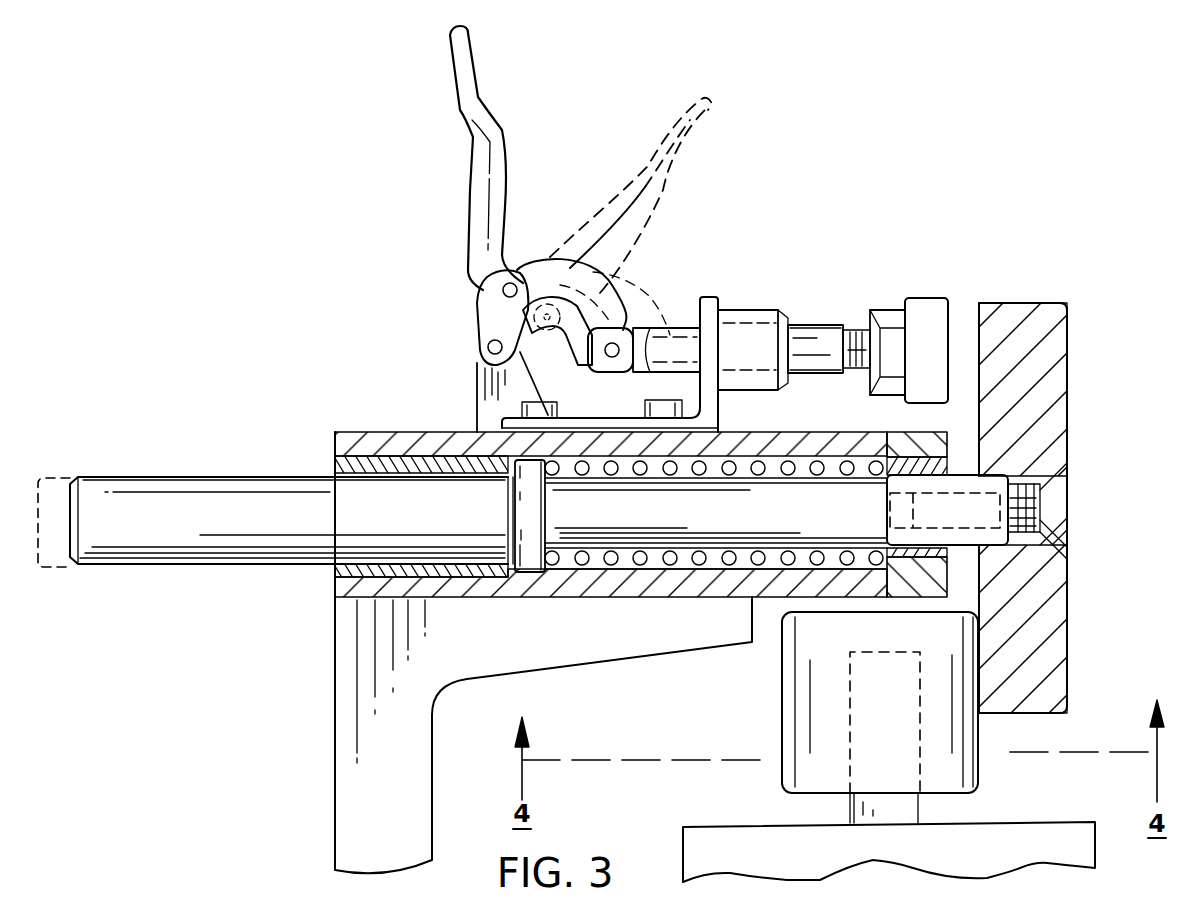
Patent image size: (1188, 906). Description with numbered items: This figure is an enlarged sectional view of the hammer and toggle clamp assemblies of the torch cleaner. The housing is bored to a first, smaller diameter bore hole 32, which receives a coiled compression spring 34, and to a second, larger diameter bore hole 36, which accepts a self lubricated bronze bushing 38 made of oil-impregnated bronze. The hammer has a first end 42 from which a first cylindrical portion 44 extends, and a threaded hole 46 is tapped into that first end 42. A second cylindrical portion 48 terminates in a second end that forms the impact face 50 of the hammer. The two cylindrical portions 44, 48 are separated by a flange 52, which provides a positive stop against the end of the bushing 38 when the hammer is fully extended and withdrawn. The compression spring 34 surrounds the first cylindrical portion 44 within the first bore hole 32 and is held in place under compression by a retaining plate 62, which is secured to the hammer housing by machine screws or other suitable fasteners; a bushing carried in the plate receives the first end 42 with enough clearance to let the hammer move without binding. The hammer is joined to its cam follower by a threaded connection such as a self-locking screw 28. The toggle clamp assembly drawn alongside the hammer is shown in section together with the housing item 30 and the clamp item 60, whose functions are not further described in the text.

The self-locking screw 28 is at (1067, 483).
The housing 30 is at (380, 432).
The first bore hole 32 is at (710, 568).
The coiled compression spring 34 is at (612, 568).
The second bore hole 36 is at (432, 572).
The self lubricated bronze bushing 38 is at (335, 462).
The first end 42 is at (947, 580).
The first cylindrical portion 44 is at (763, 523).
The threaded hole 46 is at (962, 487).
The second cylindrical portion 48 is at (136, 531).
The impact face 50 is at (65, 527).
The flange 52 is at (533, 575).
The toggle clamp 60 is at (928, 477).
The retaining plate 62 is at (1008, 548).